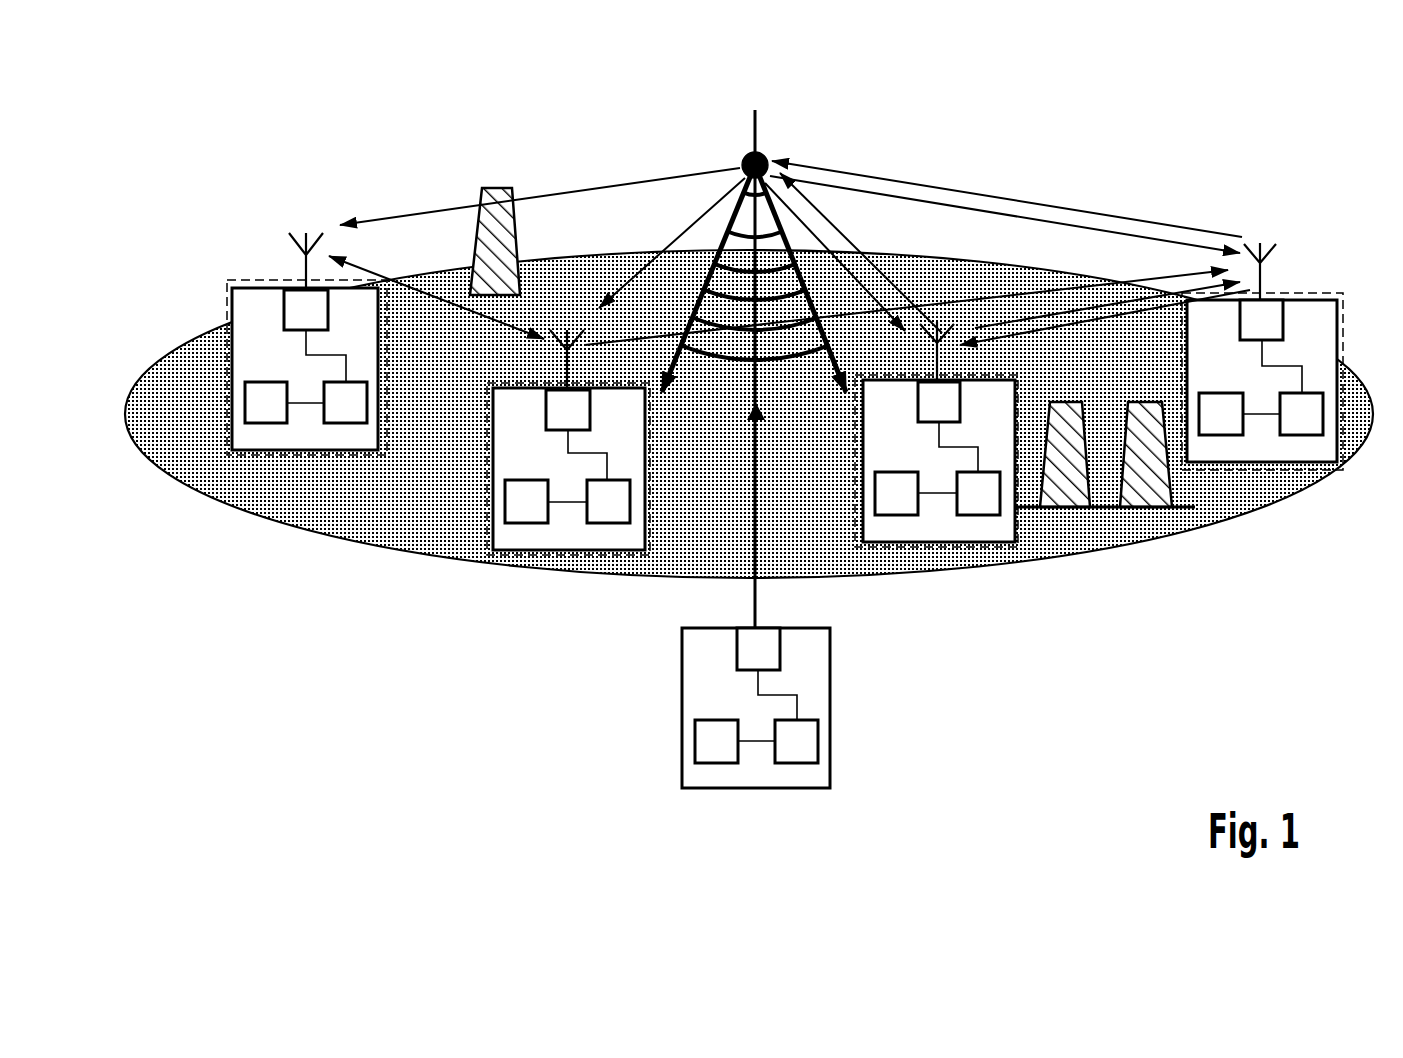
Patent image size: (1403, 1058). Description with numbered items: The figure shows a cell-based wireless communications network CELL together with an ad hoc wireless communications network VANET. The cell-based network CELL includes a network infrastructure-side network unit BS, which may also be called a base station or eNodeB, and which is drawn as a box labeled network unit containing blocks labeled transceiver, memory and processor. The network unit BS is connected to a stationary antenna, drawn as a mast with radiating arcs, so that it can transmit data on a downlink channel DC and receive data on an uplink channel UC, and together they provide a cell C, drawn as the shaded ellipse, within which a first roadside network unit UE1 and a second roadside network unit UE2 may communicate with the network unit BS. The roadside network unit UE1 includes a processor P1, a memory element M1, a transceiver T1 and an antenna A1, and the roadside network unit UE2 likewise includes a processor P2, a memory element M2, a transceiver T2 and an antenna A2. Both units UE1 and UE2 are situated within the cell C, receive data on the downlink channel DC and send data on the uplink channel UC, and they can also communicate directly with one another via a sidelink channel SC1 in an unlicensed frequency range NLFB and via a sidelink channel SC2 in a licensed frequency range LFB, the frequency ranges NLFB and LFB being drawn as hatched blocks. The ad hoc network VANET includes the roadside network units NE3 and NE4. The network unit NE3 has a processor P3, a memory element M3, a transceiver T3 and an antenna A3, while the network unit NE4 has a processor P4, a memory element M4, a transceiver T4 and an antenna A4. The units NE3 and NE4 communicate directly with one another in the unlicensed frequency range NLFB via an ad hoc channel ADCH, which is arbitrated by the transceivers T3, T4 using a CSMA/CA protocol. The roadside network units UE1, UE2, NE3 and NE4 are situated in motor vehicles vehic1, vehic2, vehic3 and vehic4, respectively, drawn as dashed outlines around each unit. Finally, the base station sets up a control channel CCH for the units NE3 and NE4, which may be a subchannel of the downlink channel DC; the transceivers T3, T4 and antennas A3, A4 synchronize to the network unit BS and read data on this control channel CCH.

The cell-based wireless communications network CELL is at (1056, 149).
The ad hoc wireless communications network VANET is at (334, 193).
The network infrastructure-side network unit BS is at (754, 737).
The element transceiver is at (765, 660).
The memory element memory is at (712, 750).
The element processor is at (803, 745).
The network infrastructure-side network unit is at (797, 778).
The first roadside network unit UE1 is at (939, 501).
The roadside network unit UE2 is at (1262, 435).
The roadside network unit NE3 is at (256, 360).
The roadside network unit NE4 is at (564, 512).
The motor vehicle vehic1 is at (943, 483).
The motor vehicle vehic2 is at (1280, 403).
The motor vehicle vehic3 is at (265, 412).
The motor vehicle vehic4 is at (573, 479).
The antenna A1 is at (933, 345).
The antenna A2 is at (1265, 275).
The antenna A3 is at (299, 272).
The antenna A4 is at (578, 350).
The transceiver T1 is at (939, 402).
The transceiver T2 is at (1261, 320).
The transceiver T3 is at (306, 310).
The transceiver T4 is at (568, 410).
The memory element M1 is at (896, 493).
The memory element M2 is at (1221, 414).
The memory element M3 is at (266, 402).
The memory element M4 is at (526, 501).
The processor P1 is at (978, 493).
The processor P2 is at (1301, 414).
The processor P3 is at (345, 402).
The processor P4 is at (608, 501).
The uplink channel UC is at (858, 168).
The downlink channel DC is at (952, 205).
The control channel CCH is at (588, 187).
The ad hoc channel ADCH is at (428, 290).
The sidelink channel SC1 is at (1178, 276).
The sidelink channel SC2 is at (1100, 318).
The cell C is at (546, 252).
The unlicensed frequency range NLFB is at (495, 188).
The licensed frequency range LFB is at (1152, 505).